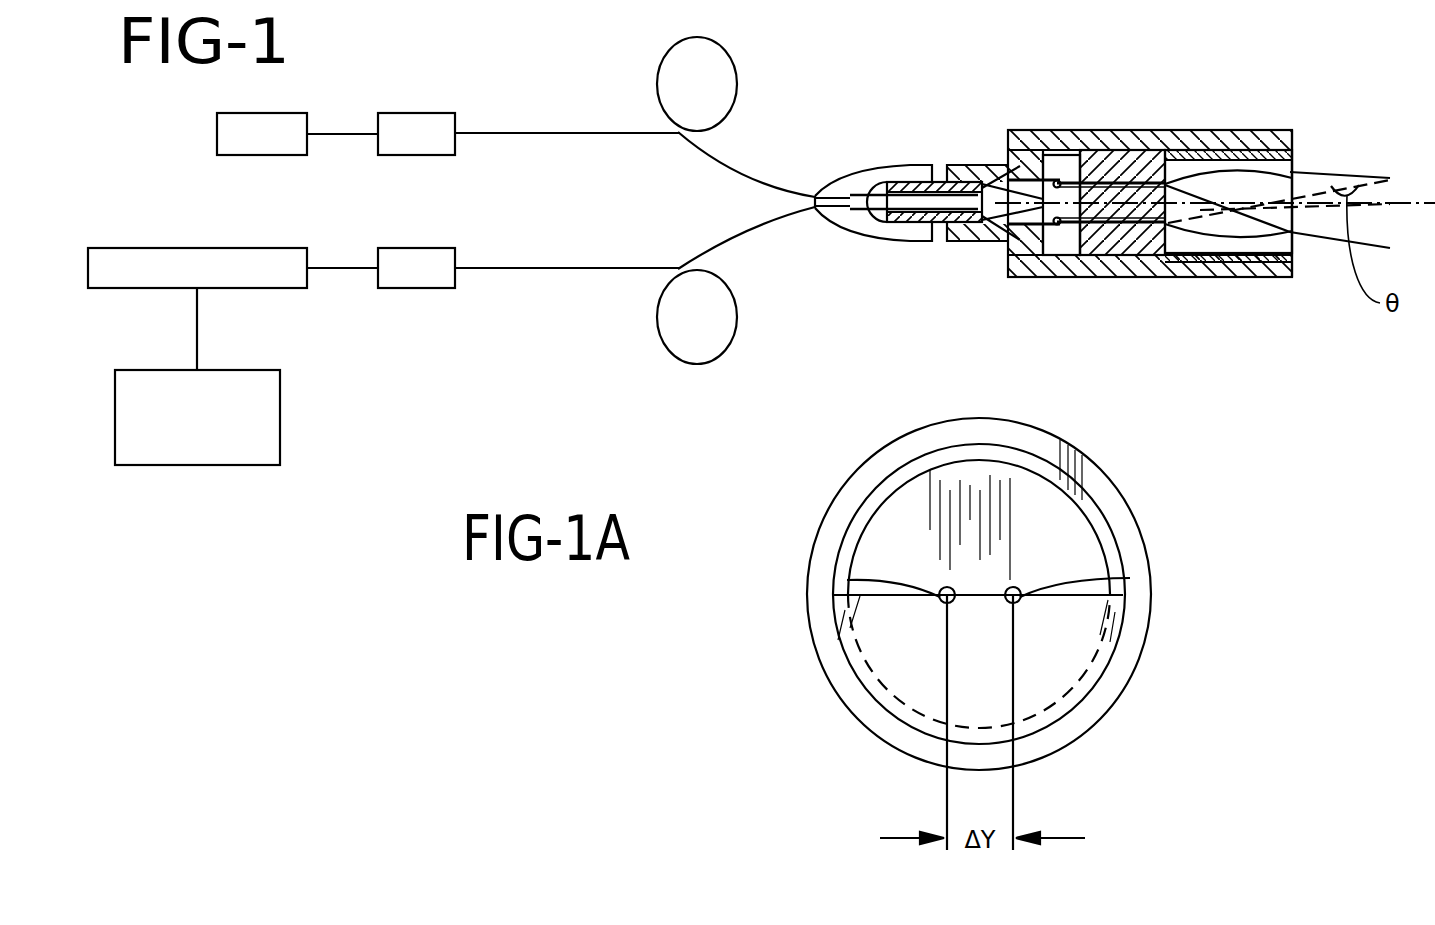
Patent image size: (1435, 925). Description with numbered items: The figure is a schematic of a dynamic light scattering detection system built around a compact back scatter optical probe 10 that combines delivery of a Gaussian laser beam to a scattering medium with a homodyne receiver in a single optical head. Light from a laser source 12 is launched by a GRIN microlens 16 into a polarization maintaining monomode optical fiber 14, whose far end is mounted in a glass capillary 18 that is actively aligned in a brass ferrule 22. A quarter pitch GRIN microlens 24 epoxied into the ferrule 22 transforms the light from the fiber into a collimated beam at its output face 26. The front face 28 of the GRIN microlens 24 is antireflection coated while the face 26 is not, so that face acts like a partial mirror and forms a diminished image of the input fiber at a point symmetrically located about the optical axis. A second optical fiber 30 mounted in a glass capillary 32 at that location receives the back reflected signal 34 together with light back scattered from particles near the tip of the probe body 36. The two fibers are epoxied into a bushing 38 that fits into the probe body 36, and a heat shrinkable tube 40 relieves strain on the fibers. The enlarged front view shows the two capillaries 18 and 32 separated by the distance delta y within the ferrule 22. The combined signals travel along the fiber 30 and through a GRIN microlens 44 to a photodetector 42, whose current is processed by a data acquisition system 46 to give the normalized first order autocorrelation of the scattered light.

In FIG. 1, the back scatter optical probe 10 is at (1097, 130).
In FIG. 1, the laser source 12 is at (217, 140).
In FIG. 1, the polarization maintaining monomode optical fiber 14 is at (522, 133).
In FIG. 1, the GRIN microlens 16 is at (412, 113).
In FIG. 1, the glass capillary 18 is at (1060, 183).
In FIG. 1A, the glass capillary 18 is at (850, 581).
In FIG. 1, the brass ferrule 22 is at (1115, 258).
In FIG. 1A, the brass ferrule 22 is at (897, 668).
In FIG. 1, the quarter pitch GRIN microlens 24 is at (1255, 218).
In FIG. 1A, the quarter pitch GRIN microlens 24 is at (1055, 510).
In FIG. 1, the output face 26 is at (1292, 165).
In FIG. 1, the front face 28 is at (1178, 130).
In FIG. 1, the optical fiber 30 is at (566, 268).
In FIG. 1, the glass capillary 32 is at (1066, 258).
In FIG. 1A, the glass capillary 32 is at (1128, 578).
In FIG. 1, the back reflected signal 34 is at (1213, 130).
In FIG. 1, the probe body 36 is at (1281, 275).
In FIG. 1, the bushing 38 is at (938, 243).
In FIG. 1, the heat shrinkable tube 40 is at (885, 168).
In FIG. 1, the photodetector 42 is at (197, 248).
In FIG. 1, the GRIN microlens 44 is at (413, 248).
In FIG. 1, the data acquisition system 46 is at (280, 432).